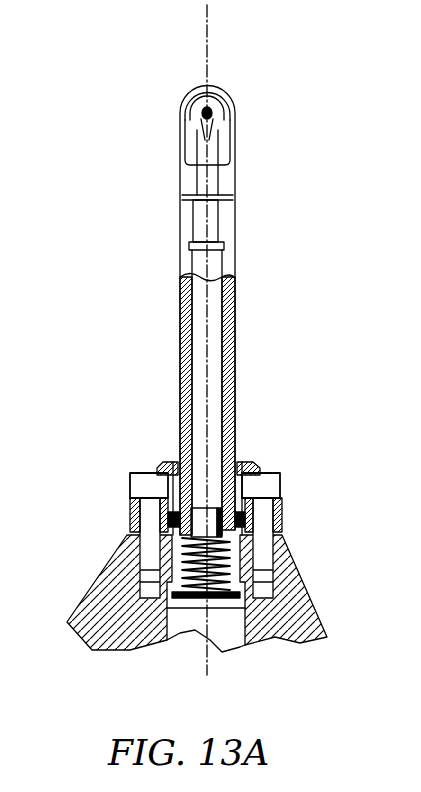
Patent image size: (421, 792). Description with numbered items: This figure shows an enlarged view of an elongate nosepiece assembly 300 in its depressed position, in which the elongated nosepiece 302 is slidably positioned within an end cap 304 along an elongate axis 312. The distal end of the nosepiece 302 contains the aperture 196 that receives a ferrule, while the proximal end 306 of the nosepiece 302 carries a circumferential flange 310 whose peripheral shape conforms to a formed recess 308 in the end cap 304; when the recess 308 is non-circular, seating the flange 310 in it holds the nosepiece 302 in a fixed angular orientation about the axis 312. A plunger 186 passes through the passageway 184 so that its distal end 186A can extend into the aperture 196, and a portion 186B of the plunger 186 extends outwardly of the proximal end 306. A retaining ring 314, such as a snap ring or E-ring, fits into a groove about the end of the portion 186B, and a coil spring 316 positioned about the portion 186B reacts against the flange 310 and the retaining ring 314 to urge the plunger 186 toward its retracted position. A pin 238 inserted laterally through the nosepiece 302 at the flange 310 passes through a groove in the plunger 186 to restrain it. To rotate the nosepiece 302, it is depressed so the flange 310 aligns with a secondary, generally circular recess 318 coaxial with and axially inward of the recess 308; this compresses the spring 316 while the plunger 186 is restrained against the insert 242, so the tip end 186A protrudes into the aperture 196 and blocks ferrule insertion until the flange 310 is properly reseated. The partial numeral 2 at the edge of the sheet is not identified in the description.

The elongate axis 312 is at (207, 30).
The elongate nosepiece assembly 300 is at (254, 397).
The aperture 196 is at (205, 99).
The plunger 186 is at (209, 148).
The distal end of plunger 186A is at (200, 112).
The elongated nosepiece 302 is at (234, 203).
The passageway 184 is at (219, 318).
The retaining ring 314 is at (247, 622).
The insert 242 is at (225, 650).
The portion of plunger 186B is at (246, 549).
The coil spring 316 is at (290, 578).
The end cap 304 is at (258, 466).
The recess 308 is at (130, 510).
The proximal end of nosepiece 306 is at (283, 493).
The circumferential flange 310 is at (168, 528).
The pin 238 is at (265, 518).
The secondary recess 318 is at (122, 560).
The partial numeral 2 is at (409, 459).